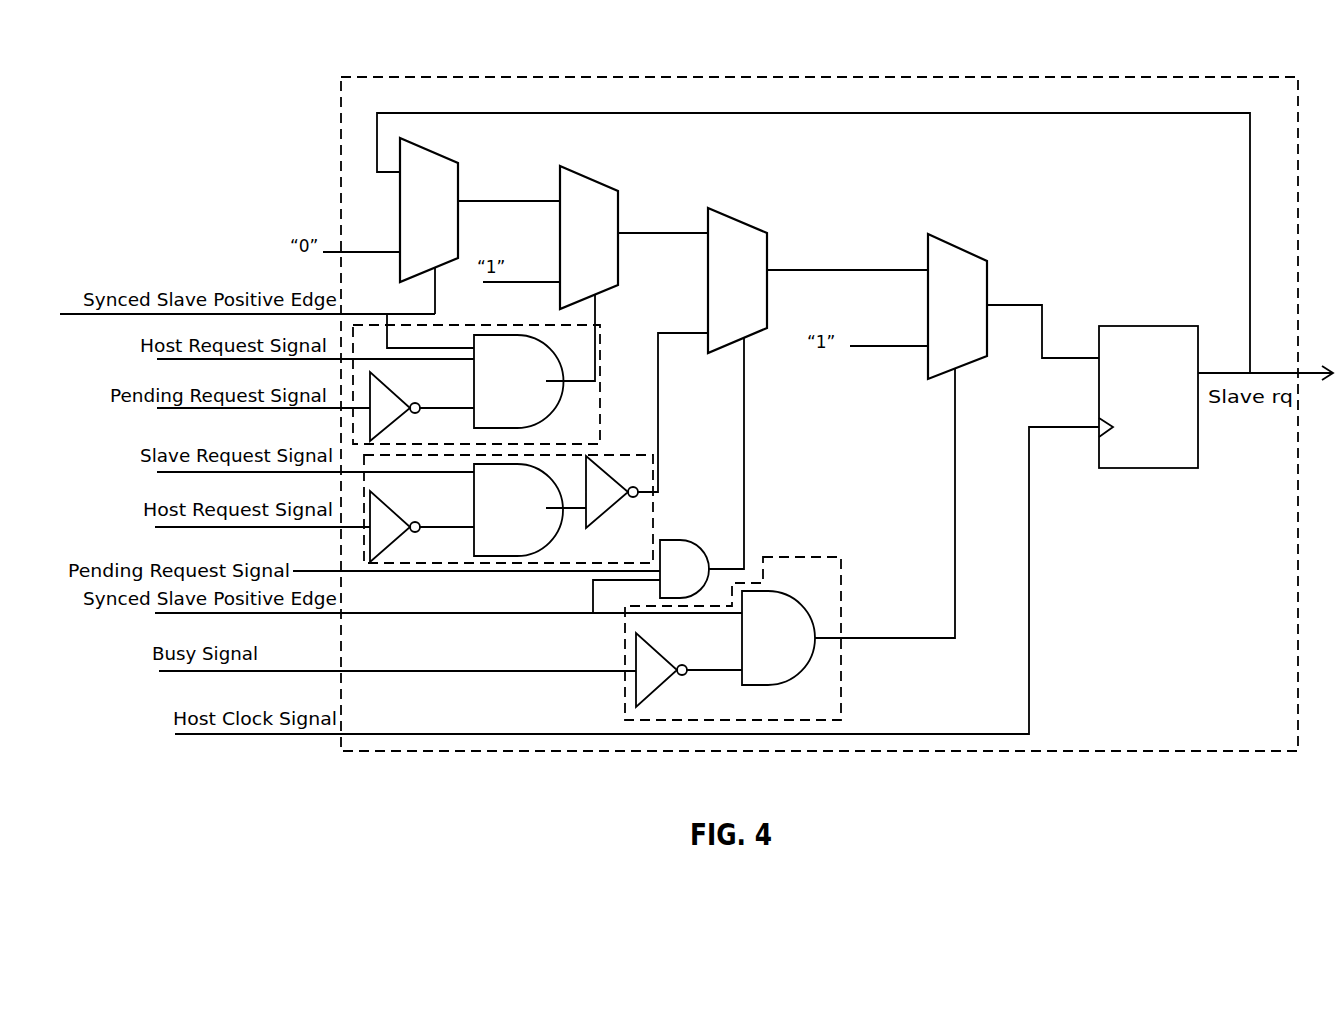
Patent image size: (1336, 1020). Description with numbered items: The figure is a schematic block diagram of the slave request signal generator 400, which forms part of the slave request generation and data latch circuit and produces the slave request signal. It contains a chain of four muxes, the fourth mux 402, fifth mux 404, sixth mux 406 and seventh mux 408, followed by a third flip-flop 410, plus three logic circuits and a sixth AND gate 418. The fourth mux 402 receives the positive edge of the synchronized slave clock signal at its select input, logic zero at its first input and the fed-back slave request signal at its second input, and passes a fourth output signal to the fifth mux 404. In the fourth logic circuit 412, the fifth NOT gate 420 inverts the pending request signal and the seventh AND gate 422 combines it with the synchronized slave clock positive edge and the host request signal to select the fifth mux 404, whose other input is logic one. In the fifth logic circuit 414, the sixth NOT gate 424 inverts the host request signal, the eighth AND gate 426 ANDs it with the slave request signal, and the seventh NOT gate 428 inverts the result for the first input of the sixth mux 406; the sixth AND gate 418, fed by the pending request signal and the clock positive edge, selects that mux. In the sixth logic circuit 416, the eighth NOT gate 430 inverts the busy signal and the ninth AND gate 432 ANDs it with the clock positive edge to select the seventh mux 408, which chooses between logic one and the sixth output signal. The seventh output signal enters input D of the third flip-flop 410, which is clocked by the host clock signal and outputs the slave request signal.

The slave request signal generator 400 is at (425, 752).
The fourth mux 402 is at (430, 148).
The fifth mux 404 is at (590, 176).
The sixth mux 406 is at (740, 222).
The seventh mux 408 is at (958, 246).
The third flip-flop 410 is at (1150, 326).
The fourth logic circuit 412 is at (600, 385).
The fifth logic circuit 414 is at (653, 508).
The sixth logic circuit 416 is at (797, 557).
The sixth AND gate 418 is at (682, 540).
The fifth NOT gate 420 is at (397, 395).
The seventh AND gate 422 is at (540, 362).
The sixth NOT gate 424 is at (398, 502).
The eighth AND gate 426 is at (570, 482).
The seventh NOT gate 428 is at (603, 512).
The eighth NOT gate 430 is at (653, 645).
The ninth AND gate 432 is at (768, 590).